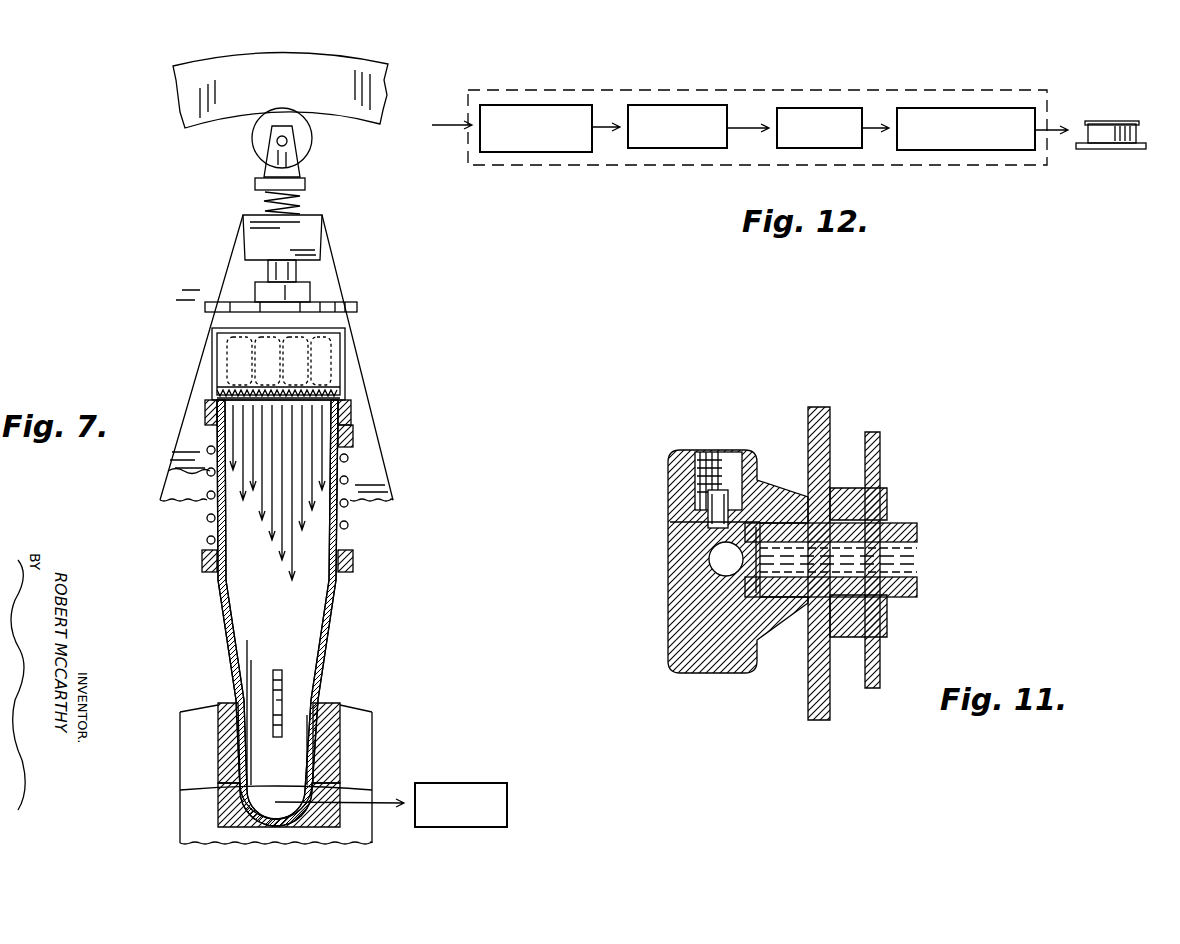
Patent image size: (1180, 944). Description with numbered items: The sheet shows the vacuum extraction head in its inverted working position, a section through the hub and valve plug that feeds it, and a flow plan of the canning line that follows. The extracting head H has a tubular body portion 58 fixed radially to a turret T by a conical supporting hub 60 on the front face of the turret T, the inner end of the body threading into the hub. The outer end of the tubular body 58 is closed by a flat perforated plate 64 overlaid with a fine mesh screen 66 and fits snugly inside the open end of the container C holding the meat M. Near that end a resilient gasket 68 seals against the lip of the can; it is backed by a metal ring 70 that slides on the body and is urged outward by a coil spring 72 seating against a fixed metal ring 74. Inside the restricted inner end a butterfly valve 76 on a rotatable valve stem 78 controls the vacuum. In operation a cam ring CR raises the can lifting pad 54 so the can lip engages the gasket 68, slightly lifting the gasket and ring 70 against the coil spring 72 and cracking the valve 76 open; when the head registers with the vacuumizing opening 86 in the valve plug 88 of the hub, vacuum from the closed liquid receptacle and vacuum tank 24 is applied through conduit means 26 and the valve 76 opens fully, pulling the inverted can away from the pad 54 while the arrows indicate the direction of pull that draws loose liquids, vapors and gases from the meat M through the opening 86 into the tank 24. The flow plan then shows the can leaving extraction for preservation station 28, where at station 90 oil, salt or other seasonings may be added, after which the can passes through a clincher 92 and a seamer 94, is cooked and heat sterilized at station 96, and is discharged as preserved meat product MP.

In FIG. 7, the cam ring CR is at (358, 106).
In FIG. 7, the can lifting pad 54 is at (332, 302).
In FIG. 7, the turret T is at (393, 478).
In FIG. 11, the turret T is at (830, 420).
In FIG. 7, the coil spring 72 is at (168, 471).
In FIG. 7, the container C is at (345, 332).
In FIG. 7, the meat M is at (230, 352).
In FIG. 7, the fine mesh screen 66 is at (335, 408).
In FIG. 7, the tubular body portion 58 is at (335, 610).
In FIG. 7, the extracting head H is at (207, 621).
In FIG. 7, the resilient gasket 68 is at (205, 410).
In FIG. 7, the flat perforated plate 64 is at (351, 412).
In FIG. 7, the metal ring 70 is at (353, 440).
In FIG. 7, the metal ring 74 is at (353, 568).
In FIG. 7, the butterfly valve 76 is at (282, 678).
In FIG. 7, the rotatable valve stem 78 is at (282, 700).
In FIG. 7, the supporting hub 60 is at (372, 726).
In FIG. 11, the supporting hub 60 is at (745, 455).
In FIG. 7, the vacuumizing opening 86 is at (215, 788).
In FIG. 11, the vacuumizing opening 86 is at (715, 522).
In FIG. 7, the valve plug 88 is at (195, 826).
In FIG. 11, the valve plug 88 is at (680, 560).
In FIG. 7, the conduit means 26 is at (386, 806).
In FIG. 11, the conduit means 26 is at (900, 567).
In FIG. 7, the vacuum source 24 is at (508, 802).
In FIG. 12, the preservation station 28 is at (600, 90).
In FIG. 12, the seasoning station 90 is at (530, 105).
In FIG. 12, the clincher 92 is at (675, 105).
In FIG. 12, the seamer 94 is at (820, 108).
In FIG. 12, the heat sterilizing station 96 is at (960, 108).
In FIG. 12, the preserved meat product MP is at (1118, 122).